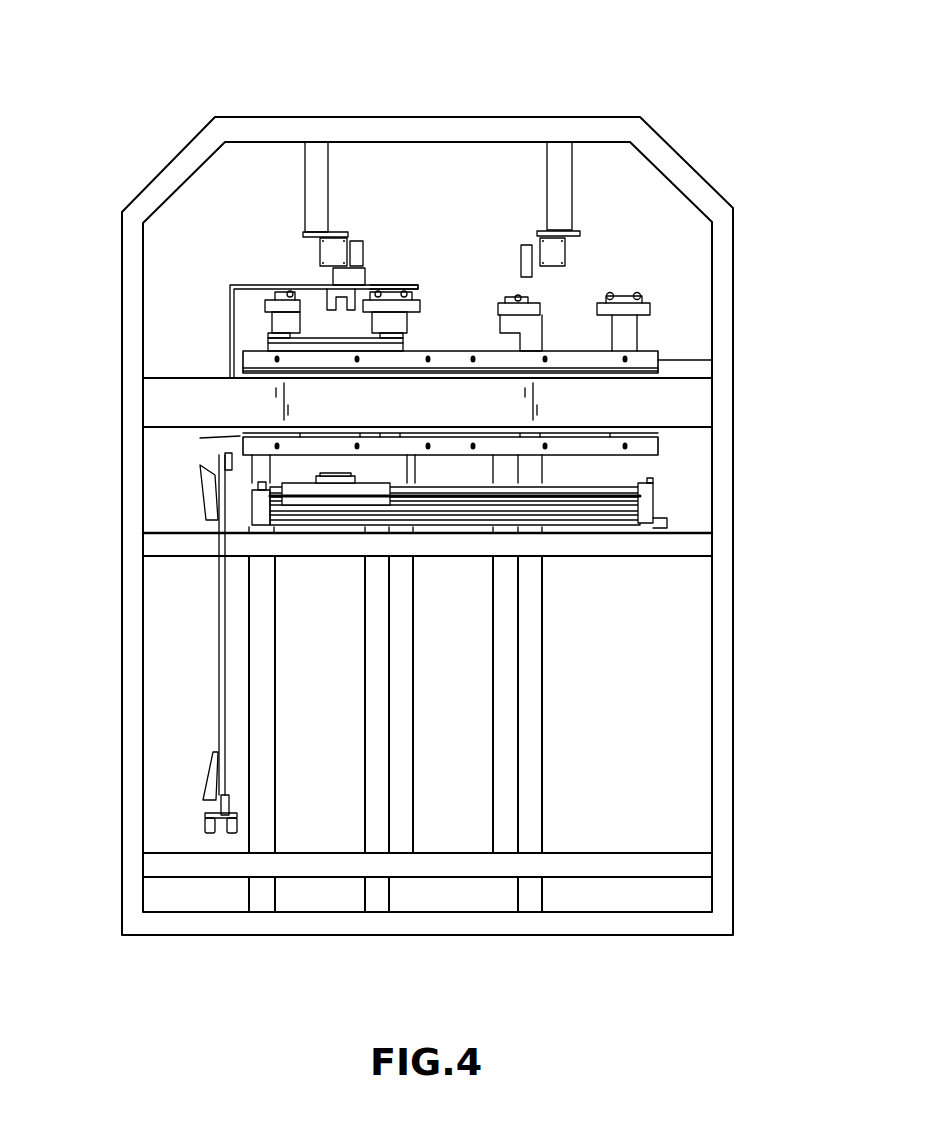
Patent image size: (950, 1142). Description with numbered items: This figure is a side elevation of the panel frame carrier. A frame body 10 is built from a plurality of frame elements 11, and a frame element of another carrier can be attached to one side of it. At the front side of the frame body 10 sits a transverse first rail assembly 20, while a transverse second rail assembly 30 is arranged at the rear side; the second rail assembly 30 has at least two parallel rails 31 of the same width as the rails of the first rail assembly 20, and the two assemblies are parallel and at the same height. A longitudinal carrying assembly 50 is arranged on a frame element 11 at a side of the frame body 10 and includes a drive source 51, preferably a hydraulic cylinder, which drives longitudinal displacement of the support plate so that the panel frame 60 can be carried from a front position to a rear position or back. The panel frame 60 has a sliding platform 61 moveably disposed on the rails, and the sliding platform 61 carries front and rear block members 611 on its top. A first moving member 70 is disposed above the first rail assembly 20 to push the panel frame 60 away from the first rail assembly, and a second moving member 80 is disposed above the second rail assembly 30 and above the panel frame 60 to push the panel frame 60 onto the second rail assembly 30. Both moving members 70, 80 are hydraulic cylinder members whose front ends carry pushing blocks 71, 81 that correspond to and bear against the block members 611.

The frame body 10 is at (106, 160).
The frame element 11 is at (697, 162).
The transverse first rail assembly 20 is at (255, 323).
The transverse second rail assembly 30 is at (594, 276).
The rail 31 is at (642, 294).
The longitudinal carrying assembly 50 is at (672, 470).
The drive source 51 is at (560, 497).
The panel frame 60 is at (238, 265).
The sliding platform 61 is at (412, 284).
The block member 611 is at (372, 284).
The first moving member 70 is at (318, 258).
The pushing block 71 is at (353, 278).
The second moving member 80 is at (560, 255).
The pushing block 81 is at (519, 268).